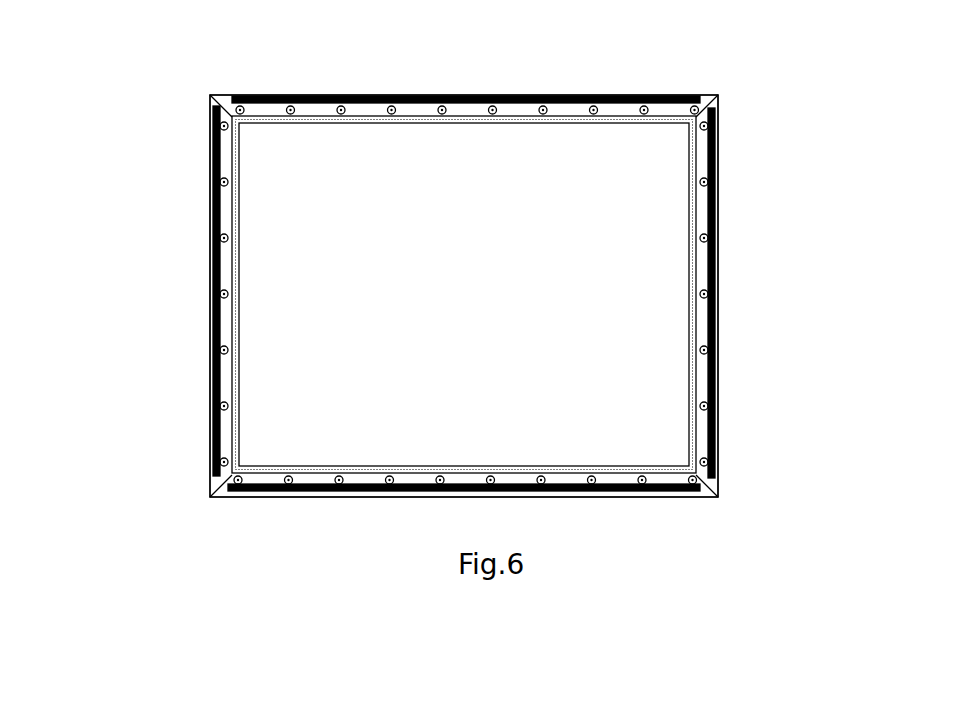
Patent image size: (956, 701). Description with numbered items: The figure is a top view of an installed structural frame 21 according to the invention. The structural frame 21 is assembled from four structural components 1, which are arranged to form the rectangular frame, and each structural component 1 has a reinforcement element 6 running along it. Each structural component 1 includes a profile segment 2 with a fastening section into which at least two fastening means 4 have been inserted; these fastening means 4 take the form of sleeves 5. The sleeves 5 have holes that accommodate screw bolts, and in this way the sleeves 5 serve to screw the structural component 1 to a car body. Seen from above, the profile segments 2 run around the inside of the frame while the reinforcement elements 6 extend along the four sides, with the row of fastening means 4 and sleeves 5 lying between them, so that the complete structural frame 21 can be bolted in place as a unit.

The structural frame 21 is at (140, 36).
The structural component 1 is at (203, 97).
The profile segment 2 is at (466, 117).
The reinforcement element 6 is at (673, 94).
The fastening means 4 is at (464, 357).
The sleeve 5 is at (649, 497).